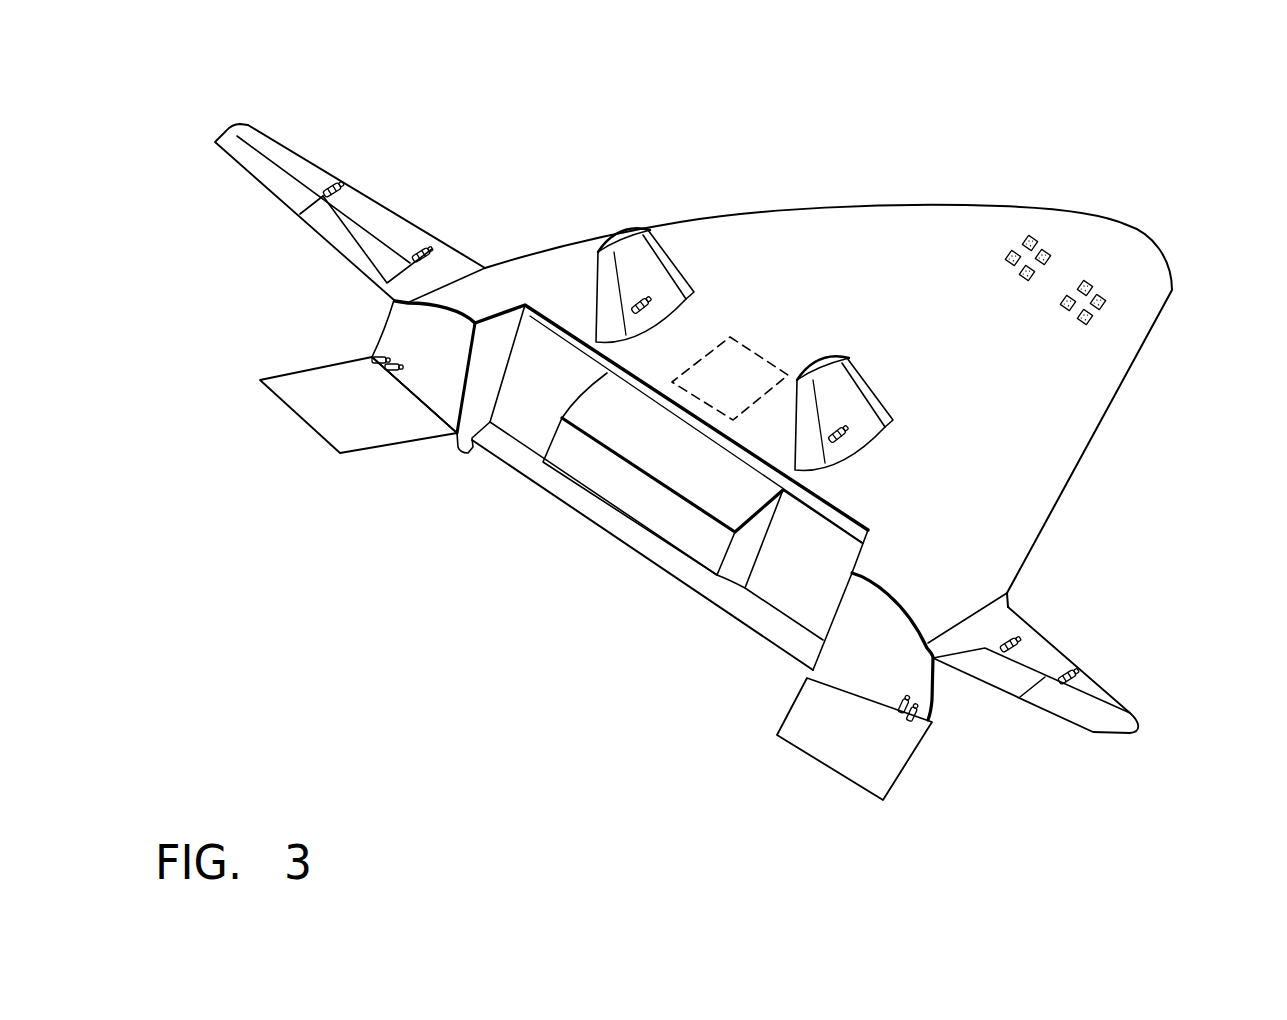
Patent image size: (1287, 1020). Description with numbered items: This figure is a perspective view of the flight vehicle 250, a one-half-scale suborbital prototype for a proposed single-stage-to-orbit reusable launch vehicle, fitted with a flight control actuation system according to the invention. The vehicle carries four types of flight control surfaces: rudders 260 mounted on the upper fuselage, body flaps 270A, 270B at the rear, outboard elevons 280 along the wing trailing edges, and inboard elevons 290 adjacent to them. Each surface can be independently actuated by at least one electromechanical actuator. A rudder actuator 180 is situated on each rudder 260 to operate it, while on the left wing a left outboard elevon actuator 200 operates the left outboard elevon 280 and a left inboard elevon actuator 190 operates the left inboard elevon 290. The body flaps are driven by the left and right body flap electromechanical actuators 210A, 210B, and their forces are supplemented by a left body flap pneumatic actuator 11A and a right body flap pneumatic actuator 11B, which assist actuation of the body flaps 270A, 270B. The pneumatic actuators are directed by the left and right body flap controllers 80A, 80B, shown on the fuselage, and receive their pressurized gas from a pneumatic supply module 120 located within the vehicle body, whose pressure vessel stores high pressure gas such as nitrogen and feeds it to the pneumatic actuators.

The X-33 flight vehicle 250 is at (958, 108).
The pneumatic supply module 120 is at (687, 412).
The left body flap pneumatic actuator 11A is at (400, 383).
The right body flap pneumatic actuator 11B is at (897, 700).
The left body flap 270A is at (325, 400).
The right body flap 270B is at (833, 737).
The left inboard elevon actuator 190 is at (446, 237).
The outboard elevon 280 is at (255, 167).
The inboard elevon 290 is at (340, 232).
The left outboard elevon actuator 200 is at (347, 173).
The rudder 260 is at (627, 225).
The rudder actuator 180 is at (655, 290).
The left body flap controller 80A is at (1032, 230).
The right body flap controller 80B is at (1110, 292).
The left body flap electromechanical actuator 210A is at (370, 357).
The right body flap electromechanical actuator 210B is at (933, 727).